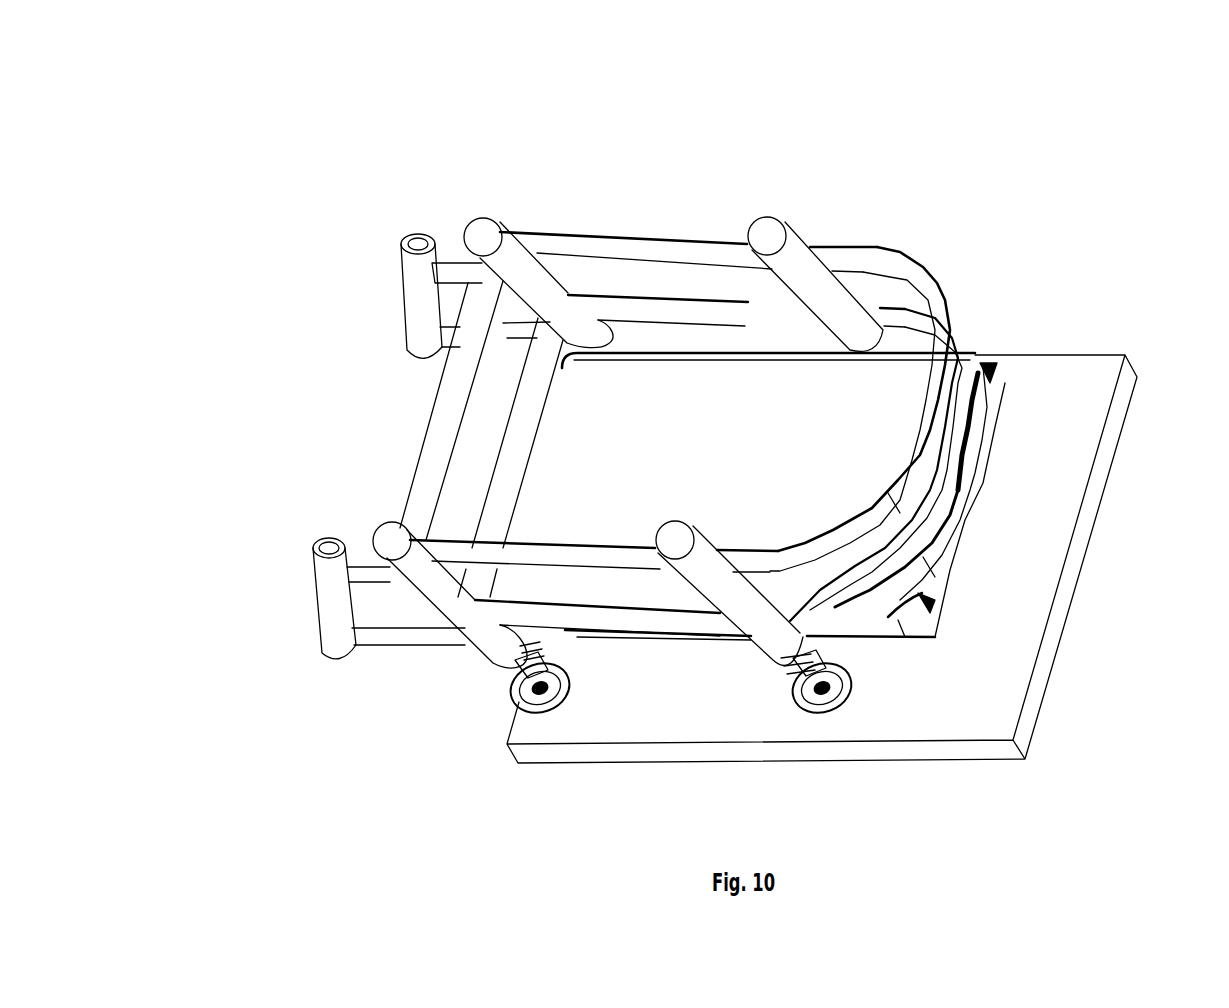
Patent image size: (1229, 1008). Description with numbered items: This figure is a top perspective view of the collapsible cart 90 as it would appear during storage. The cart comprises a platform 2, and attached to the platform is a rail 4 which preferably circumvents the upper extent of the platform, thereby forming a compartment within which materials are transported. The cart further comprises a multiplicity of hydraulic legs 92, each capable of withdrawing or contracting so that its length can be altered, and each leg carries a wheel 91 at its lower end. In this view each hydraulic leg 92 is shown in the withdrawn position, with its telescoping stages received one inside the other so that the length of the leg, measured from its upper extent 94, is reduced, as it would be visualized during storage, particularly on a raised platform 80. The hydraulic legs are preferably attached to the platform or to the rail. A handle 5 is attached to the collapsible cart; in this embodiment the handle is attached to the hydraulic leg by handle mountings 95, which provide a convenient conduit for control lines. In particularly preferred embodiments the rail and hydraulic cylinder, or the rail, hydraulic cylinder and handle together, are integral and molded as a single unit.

The platform 2 is at (769, 478).
The rail 4 is at (677, 300).
The handle 5 is at (402, 295).
The raised platform 80 is at (1015, 560).
The collapsible cart 90 is at (694, 453).
The wheel 91 is at (505, 693).
The hydraulic leg 92 is at (565, 278).
The upper extent 94 is at (497, 217).
The handle mountings 95 is at (455, 262).